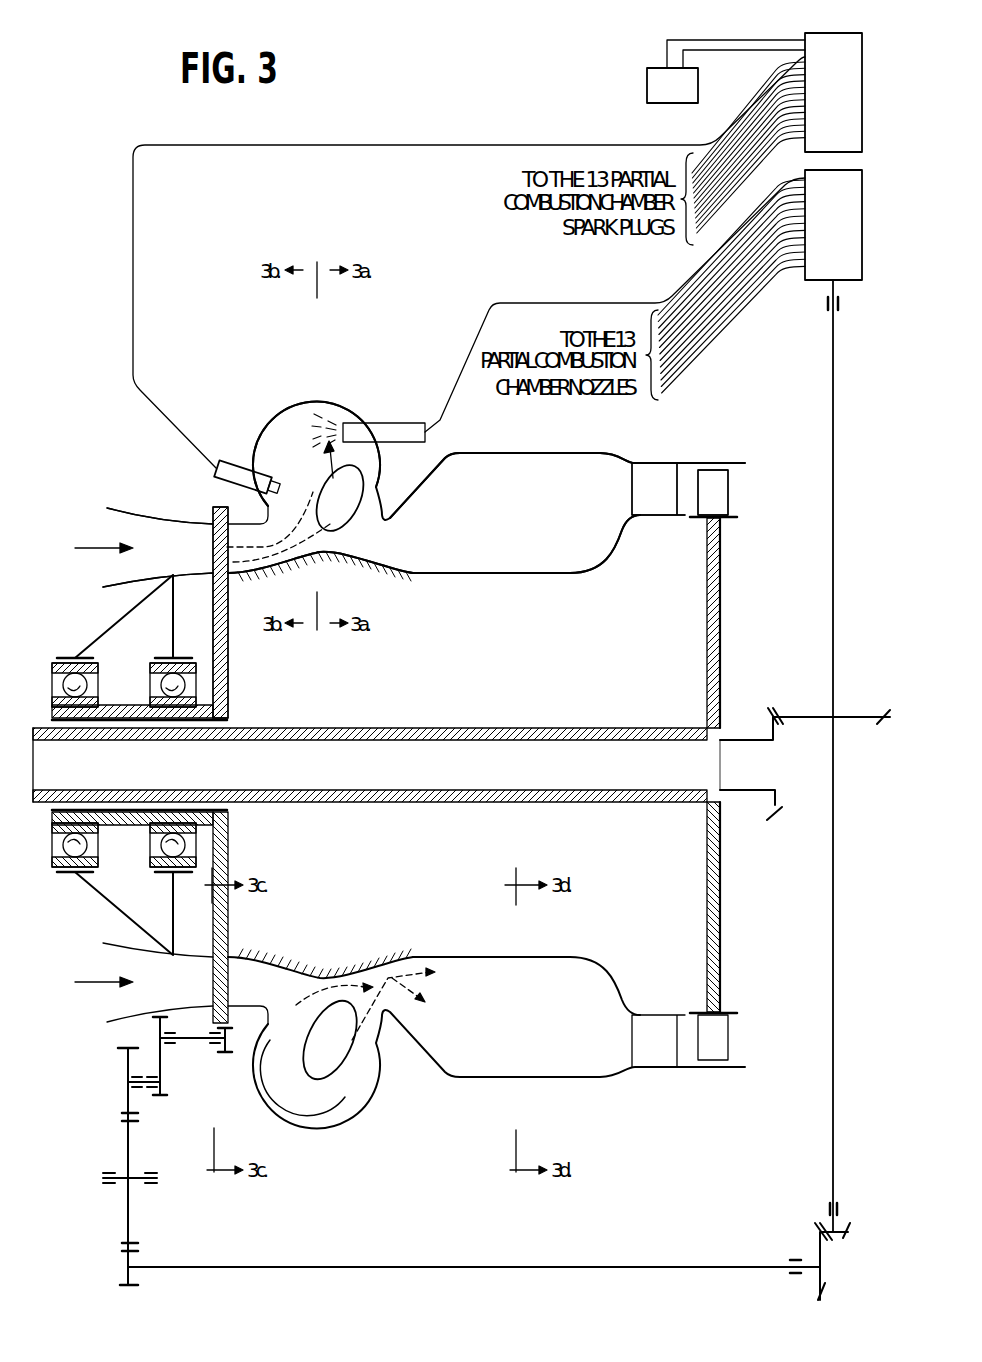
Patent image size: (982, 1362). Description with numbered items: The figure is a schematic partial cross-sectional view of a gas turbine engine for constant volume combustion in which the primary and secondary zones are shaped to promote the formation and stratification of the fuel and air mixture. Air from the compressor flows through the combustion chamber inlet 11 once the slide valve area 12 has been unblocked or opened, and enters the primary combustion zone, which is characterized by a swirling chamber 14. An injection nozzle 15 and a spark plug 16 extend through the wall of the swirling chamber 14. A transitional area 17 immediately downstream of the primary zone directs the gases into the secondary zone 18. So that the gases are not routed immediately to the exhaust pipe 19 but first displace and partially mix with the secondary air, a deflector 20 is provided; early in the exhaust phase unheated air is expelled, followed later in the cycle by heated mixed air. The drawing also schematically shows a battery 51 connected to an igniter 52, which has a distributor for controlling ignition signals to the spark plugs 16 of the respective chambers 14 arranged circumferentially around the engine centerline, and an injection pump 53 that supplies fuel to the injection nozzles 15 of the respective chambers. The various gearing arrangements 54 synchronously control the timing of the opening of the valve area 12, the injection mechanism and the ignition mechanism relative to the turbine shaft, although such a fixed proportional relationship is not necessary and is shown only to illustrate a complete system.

The combustion chamber inlet 11 is at (125, 517).
The slide valve area 12 is at (216, 510).
The swirling chamber 14 is at (313, 407).
The injection nozzle 15 is at (393, 423).
The spark plug 16 is at (236, 466).
The transitional area 17 is at (387, 575).
The secondary zone 18 is at (500, 553).
The exhaust pipe 19 is at (663, 463).
The deflector 20 is at (620, 528).
The battery 51 is at (647, 88).
The igniter 52 is at (849, 38).
The injection pump 53 is at (852, 281).
The gearing arrangements 54 is at (785, 722).